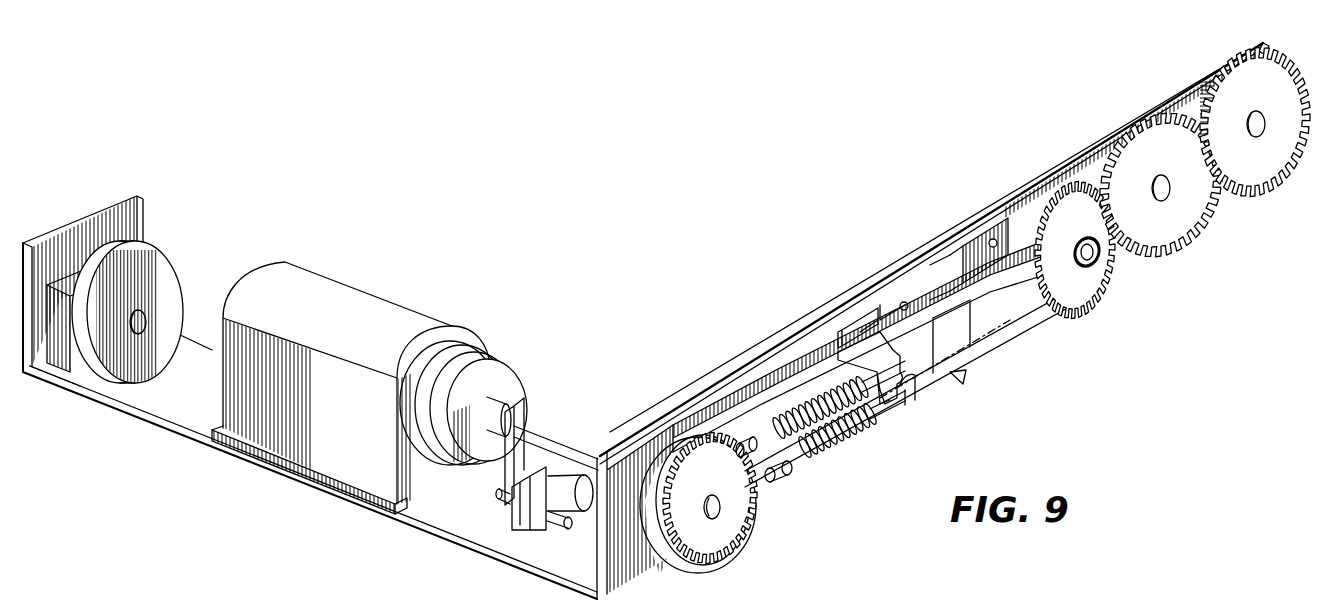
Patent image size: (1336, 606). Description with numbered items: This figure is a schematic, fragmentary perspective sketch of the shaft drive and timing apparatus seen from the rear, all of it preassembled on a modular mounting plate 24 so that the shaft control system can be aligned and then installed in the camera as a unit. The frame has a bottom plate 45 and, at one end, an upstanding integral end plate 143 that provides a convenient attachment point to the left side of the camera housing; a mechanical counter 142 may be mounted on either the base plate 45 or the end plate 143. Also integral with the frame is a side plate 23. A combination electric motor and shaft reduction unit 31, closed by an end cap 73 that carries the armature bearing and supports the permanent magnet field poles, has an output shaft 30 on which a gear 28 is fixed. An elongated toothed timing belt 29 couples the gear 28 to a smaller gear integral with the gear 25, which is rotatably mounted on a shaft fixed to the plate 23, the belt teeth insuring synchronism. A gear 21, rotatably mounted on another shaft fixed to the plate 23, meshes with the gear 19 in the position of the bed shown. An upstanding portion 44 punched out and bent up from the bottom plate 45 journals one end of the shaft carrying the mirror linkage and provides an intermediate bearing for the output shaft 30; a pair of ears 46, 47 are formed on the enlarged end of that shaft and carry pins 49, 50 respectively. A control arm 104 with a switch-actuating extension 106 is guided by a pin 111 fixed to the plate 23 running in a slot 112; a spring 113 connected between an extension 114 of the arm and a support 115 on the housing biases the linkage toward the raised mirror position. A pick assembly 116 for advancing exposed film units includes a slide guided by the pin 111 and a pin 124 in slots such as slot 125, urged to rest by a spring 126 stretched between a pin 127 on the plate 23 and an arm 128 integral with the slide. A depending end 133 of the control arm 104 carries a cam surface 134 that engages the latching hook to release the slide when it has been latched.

The gear 19 is at (1267, 177).
The gear 21 is at (1172, 235).
The side plate 23 is at (1020, 190).
The modular mounting plate 24 is at (445, 545).
The gear 25 is at (1083, 300).
The gear 28 is at (720, 535).
The elongated timing belt 29 is at (712, 437).
The output shaft 30 is at (555, 440).
The combination electric motor and shaft reduction unit 31 is at (413, 310).
The upstanding portion 44 is at (510, 460).
The bottom plate 45 is at (162, 407).
The ear 46 is at (523, 522).
The ear 47 is at (560, 500).
The pin 49 is at (500, 498).
The pin 50 is at (567, 517).
The end cap 73 is at (490, 355).
The control arm 104 is at (780, 367).
The switch-actuating extension 106 is at (862, 322).
The pin 111 is at (904, 302).
The slot 112 is at (887, 297).
The spring 113 is at (850, 397).
The extension 114 is at (760, 445).
The support 115 is at (883, 363).
The pick assembly 116 is at (957, 247).
The pin 124 is at (1003, 213).
The slot 125 is at (980, 237).
The spring 126 is at (840, 447).
The pin 127 is at (790, 480).
The arm 128 is at (905, 390).
The depending end 133 is at (963, 335).
The cam surface 134 is at (972, 395).
The mechanical counter 142 is at (181, 267).
The upstanding integral end plate 143 is at (140, 214).